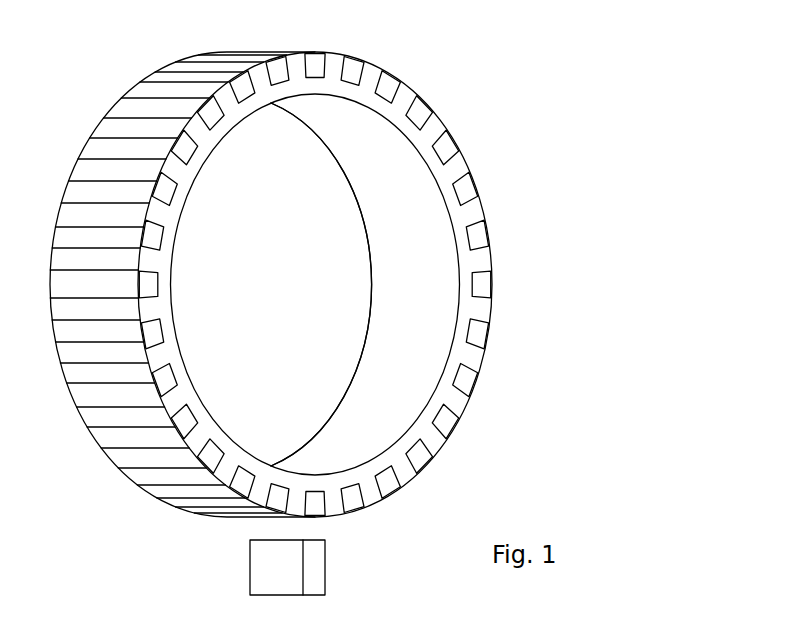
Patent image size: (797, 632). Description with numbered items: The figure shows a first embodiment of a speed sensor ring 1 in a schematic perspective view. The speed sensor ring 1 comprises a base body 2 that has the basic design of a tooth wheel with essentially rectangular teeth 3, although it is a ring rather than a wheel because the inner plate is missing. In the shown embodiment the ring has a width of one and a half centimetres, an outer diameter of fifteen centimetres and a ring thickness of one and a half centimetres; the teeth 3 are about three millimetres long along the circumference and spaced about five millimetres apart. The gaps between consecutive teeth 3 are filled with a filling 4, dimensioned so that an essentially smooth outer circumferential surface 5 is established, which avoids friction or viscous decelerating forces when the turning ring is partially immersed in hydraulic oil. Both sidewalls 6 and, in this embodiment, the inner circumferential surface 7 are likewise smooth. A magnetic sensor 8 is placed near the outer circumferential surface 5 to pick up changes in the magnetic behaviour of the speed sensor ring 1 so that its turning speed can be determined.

The speed sensor ring 1 is at (507, 135).
The base body 2 is at (371, 255).
The rectangular teeth 3 is at (480, 308).
The filling 4 is at (480, 243).
The outer circumferential surface 5 is at (157, 82).
The sidewalls 6 is at (320, 418).
The inner circumferential surface 7 is at (400, 325).
The magnetic sensor 8 is at (313, 567).